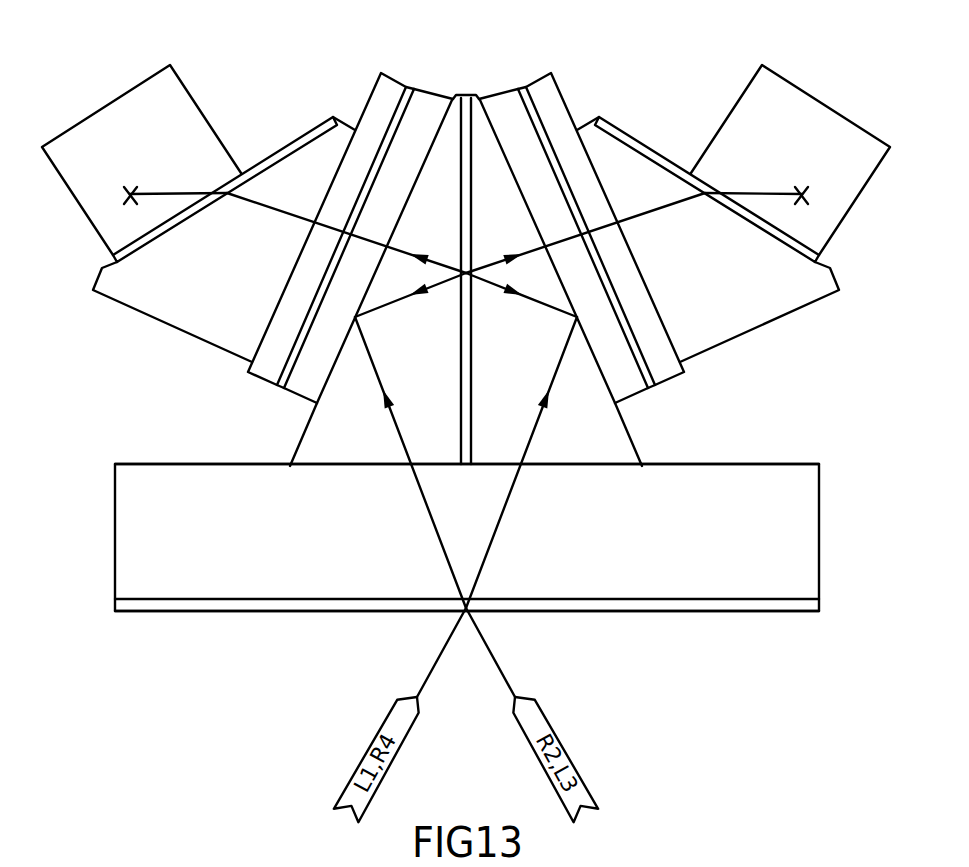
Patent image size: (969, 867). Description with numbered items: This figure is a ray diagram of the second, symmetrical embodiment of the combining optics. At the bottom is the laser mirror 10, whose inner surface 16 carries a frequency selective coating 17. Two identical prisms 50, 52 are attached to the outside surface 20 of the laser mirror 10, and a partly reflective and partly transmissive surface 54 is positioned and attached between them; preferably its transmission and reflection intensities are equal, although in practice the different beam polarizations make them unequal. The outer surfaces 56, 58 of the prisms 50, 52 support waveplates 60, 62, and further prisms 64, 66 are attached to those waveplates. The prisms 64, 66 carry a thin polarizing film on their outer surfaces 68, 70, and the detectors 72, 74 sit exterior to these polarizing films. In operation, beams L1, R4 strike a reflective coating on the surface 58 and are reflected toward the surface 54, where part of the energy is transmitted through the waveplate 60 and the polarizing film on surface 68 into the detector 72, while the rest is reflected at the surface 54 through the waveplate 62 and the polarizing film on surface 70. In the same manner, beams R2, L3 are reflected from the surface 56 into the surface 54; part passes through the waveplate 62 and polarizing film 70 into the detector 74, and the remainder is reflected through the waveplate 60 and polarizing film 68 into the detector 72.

The laser mirror 10 is at (798, 537).
The inner surface 16 is at (293, 597).
The frequency selective coating 17 is at (702, 608).
The outside surface 20 is at (790, 465).
The prism 50 is at (310, 453).
The prism 52 is at (625, 452).
The partly reflective and partly transmissive surface 54 is at (463, 96).
The outer surface 56 is at (307, 418).
The outer surface 58 is at (625, 418).
The waveplate 60 is at (366, 76).
The waveplate 62 is at (566, 76).
The prism 64 is at (328, 140).
The prism 66 is at (603, 140).
The outer surface with polarizing film 68 is at (273, 157).
The outer surface with polarizing film 70 is at (659, 158).
The detector 72 is at (127, 107).
The detector 74 is at (805, 107).